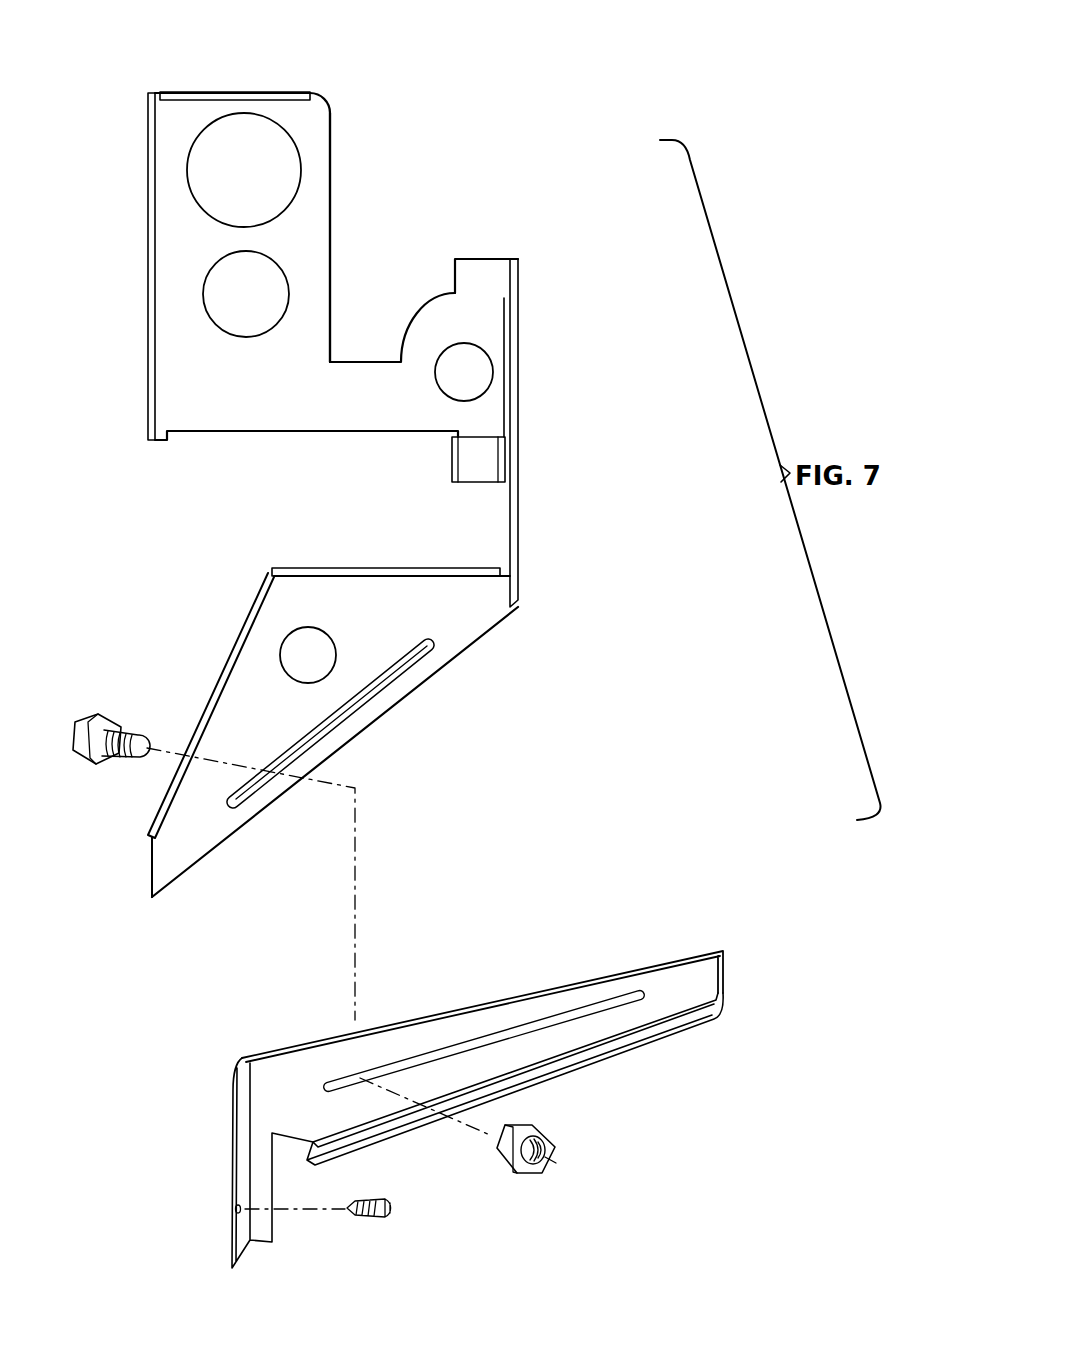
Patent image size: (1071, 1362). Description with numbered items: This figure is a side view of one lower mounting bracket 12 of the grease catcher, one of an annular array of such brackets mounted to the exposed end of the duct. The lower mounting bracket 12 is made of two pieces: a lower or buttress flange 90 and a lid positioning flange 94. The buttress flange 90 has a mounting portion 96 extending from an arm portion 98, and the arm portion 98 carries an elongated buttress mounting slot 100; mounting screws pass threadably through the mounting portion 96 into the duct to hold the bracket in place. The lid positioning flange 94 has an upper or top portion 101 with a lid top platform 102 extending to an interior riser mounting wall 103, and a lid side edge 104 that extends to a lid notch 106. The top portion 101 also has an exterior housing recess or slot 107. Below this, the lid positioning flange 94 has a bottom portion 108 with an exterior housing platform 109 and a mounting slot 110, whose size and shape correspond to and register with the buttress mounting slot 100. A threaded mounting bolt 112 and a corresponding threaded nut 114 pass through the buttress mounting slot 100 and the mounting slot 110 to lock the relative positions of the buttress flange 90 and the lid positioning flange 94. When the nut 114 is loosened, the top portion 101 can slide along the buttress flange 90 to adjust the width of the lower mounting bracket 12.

The lower mounting bracket 12 is at (596, 240).
The buttress flange 90 is at (635, 970).
The lid positioning flange 94 is at (485, 633).
The mounting portion 96 is at (228, 1197).
The arm portion 98 is at (650, 1032).
The buttress mounting slot 100 is at (497, 1043).
The top portion 101 is at (400, 160).
The lid top platform 102 is at (252, 93).
The interior riser mounting wall 103 is at (147, 190).
The lid side edge 104 is at (332, 278).
The lid notch 106 is at (372, 359).
The exterior housing slot 107 is at (513, 328).
The bottom portion 108 is at (486, 708).
The exterior housing platform 109 is at (386, 565).
The mounting slot 110 is at (335, 720).
The threaded mounting bolt 112 is at (130, 740).
The threaded nut 114 is at (528, 1168).